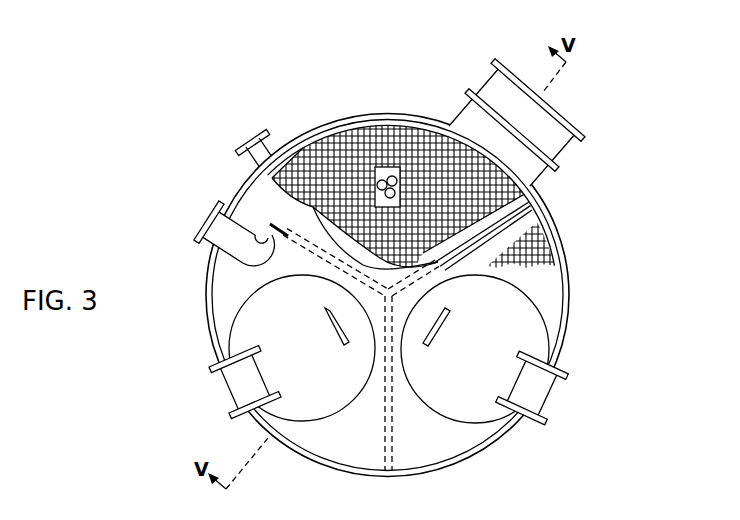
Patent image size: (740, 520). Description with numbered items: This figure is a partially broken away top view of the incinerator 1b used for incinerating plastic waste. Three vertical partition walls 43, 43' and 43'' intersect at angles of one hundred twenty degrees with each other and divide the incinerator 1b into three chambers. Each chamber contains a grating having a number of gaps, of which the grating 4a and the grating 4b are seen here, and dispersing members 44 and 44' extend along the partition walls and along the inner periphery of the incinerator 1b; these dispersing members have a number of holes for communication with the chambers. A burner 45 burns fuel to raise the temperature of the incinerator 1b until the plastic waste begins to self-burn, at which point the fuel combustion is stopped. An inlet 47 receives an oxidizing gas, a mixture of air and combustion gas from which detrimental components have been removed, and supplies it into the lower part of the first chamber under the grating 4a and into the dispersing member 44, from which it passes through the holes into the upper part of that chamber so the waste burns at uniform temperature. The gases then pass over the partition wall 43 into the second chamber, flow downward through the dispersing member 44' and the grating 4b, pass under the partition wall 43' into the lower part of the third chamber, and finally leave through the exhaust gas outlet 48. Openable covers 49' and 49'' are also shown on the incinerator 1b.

The incinerator 1b is at (321, 121).
The grating 4a is at (378, 140).
The grating 4b is at (533, 237).
The vertical partition wall 43 is at (492, 245).
The vertical partition wall 43' is at (410, 407).
The vertical partition wall 43'' is at (280, 231).
The dispersing member 44 is at (411, 175).
The dispersing member 44' is at (445, 226).
The burner 45 is at (515, 97).
The oxidizing gas inlet 47 is at (250, 145).
The exhaust gas outlet 48 is at (205, 243).
The openable cover 49' is at (506, 350).
The openable cover 49'' is at (259, 348).